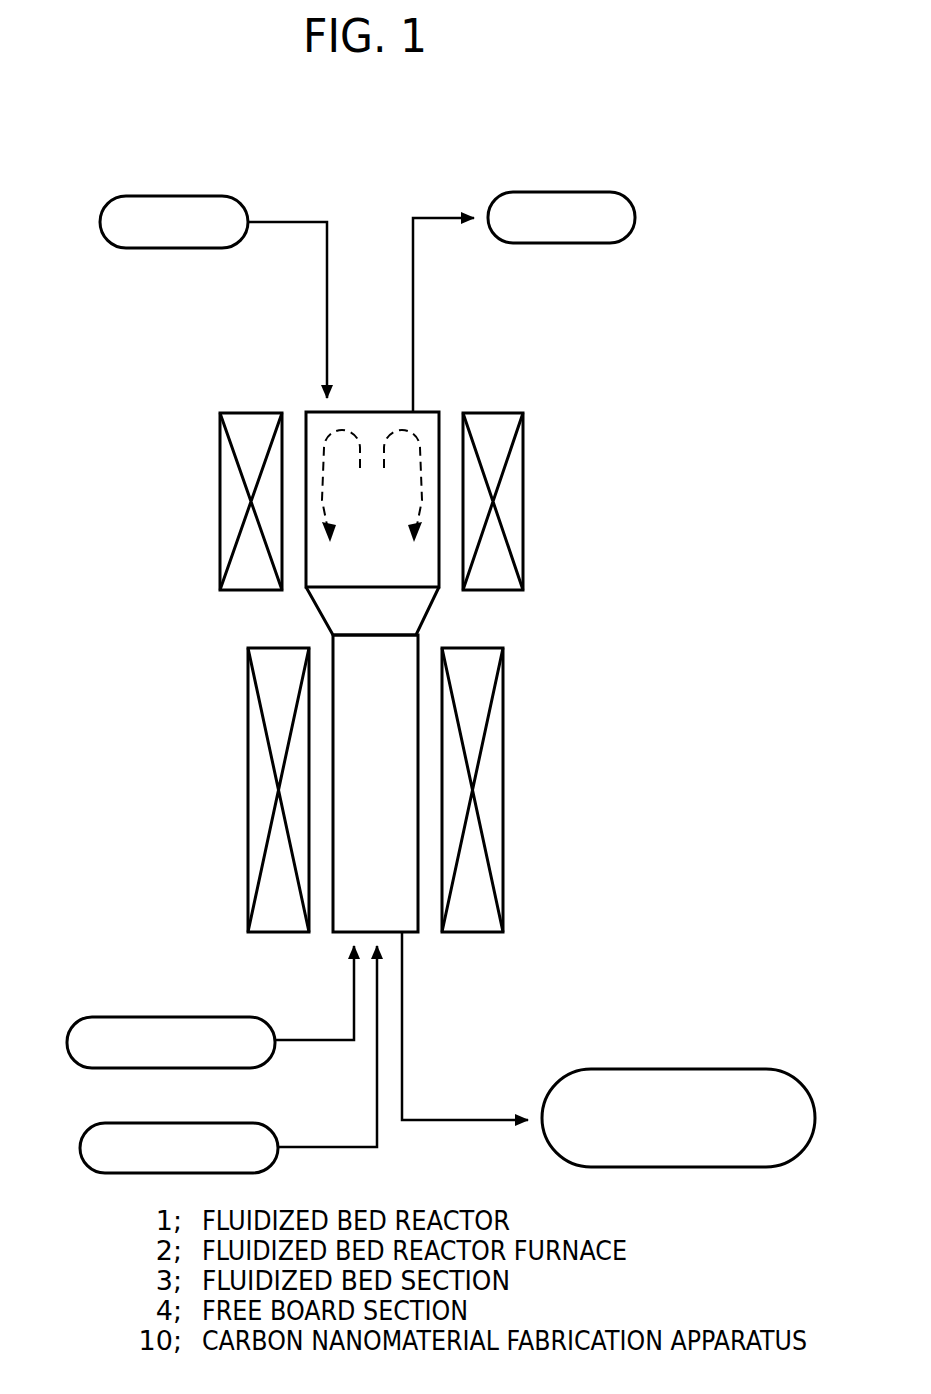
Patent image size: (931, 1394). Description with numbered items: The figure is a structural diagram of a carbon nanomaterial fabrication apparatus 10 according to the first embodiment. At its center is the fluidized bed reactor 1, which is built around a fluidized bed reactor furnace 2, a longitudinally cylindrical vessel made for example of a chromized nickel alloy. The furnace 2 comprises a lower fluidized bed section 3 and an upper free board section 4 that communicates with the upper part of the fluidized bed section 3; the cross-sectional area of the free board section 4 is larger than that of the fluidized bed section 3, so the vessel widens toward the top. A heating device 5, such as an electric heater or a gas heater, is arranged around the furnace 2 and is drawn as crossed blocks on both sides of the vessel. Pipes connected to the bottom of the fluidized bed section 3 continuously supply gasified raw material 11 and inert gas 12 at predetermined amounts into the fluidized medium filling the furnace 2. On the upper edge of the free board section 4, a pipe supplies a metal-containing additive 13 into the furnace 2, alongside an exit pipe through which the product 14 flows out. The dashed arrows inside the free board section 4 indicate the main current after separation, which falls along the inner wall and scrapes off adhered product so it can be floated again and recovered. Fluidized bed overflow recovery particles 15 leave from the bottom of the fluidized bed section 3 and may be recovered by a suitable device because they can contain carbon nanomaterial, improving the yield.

The fluidized bed reactor 1 is at (546, 398).
The fluidized bed reactor furnace 2 is at (324, 643).
The fluidized bed section 3 is at (403, 915).
The free board section 4 is at (422, 418).
The heating device 5 is at (523, 488).
The carbon nanomaterial fabrication apparatus 10 is at (400, 180).
The raw material 11 is at (178, 1017).
The inert gas 12 is at (112, 1123).
The additive 13 is at (178, 197).
The product 14 is at (565, 193).
The fluidized bed overflow recovery particles 15 is at (672, 1069).